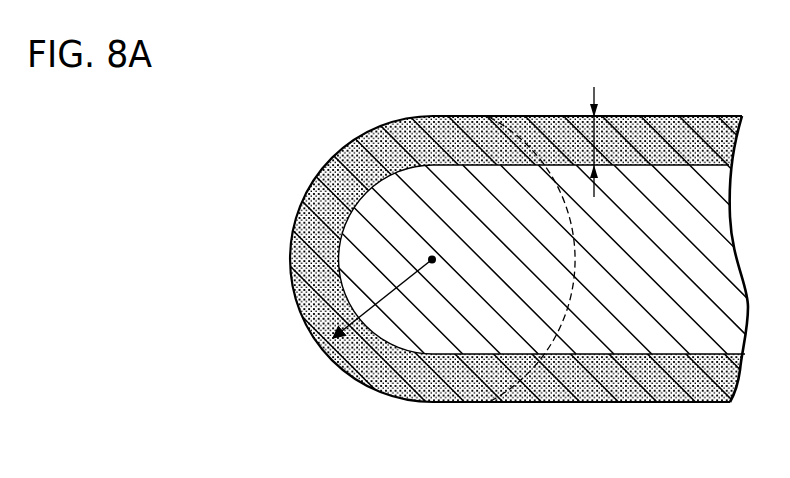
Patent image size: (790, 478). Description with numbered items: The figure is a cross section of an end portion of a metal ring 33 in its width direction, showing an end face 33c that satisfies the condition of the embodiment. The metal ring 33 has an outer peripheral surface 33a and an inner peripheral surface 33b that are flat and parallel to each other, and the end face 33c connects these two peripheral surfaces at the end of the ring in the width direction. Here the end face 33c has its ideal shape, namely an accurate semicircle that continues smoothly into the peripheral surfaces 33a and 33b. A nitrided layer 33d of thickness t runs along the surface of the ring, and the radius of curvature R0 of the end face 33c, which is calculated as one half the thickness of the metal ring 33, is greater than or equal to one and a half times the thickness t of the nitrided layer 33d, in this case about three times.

The metal ring 33 is at (725, 103).
The outer peripheral surface 33a is at (667, 117).
The inner peripheral surface 33b is at (550, 403).
The end face 33c is at (292, 247).
The nitrided layer 33d is at (550, 128).
The thickness of nitrided layer t is at (597, 141).
The radius of curvature R0 is at (380, 306).